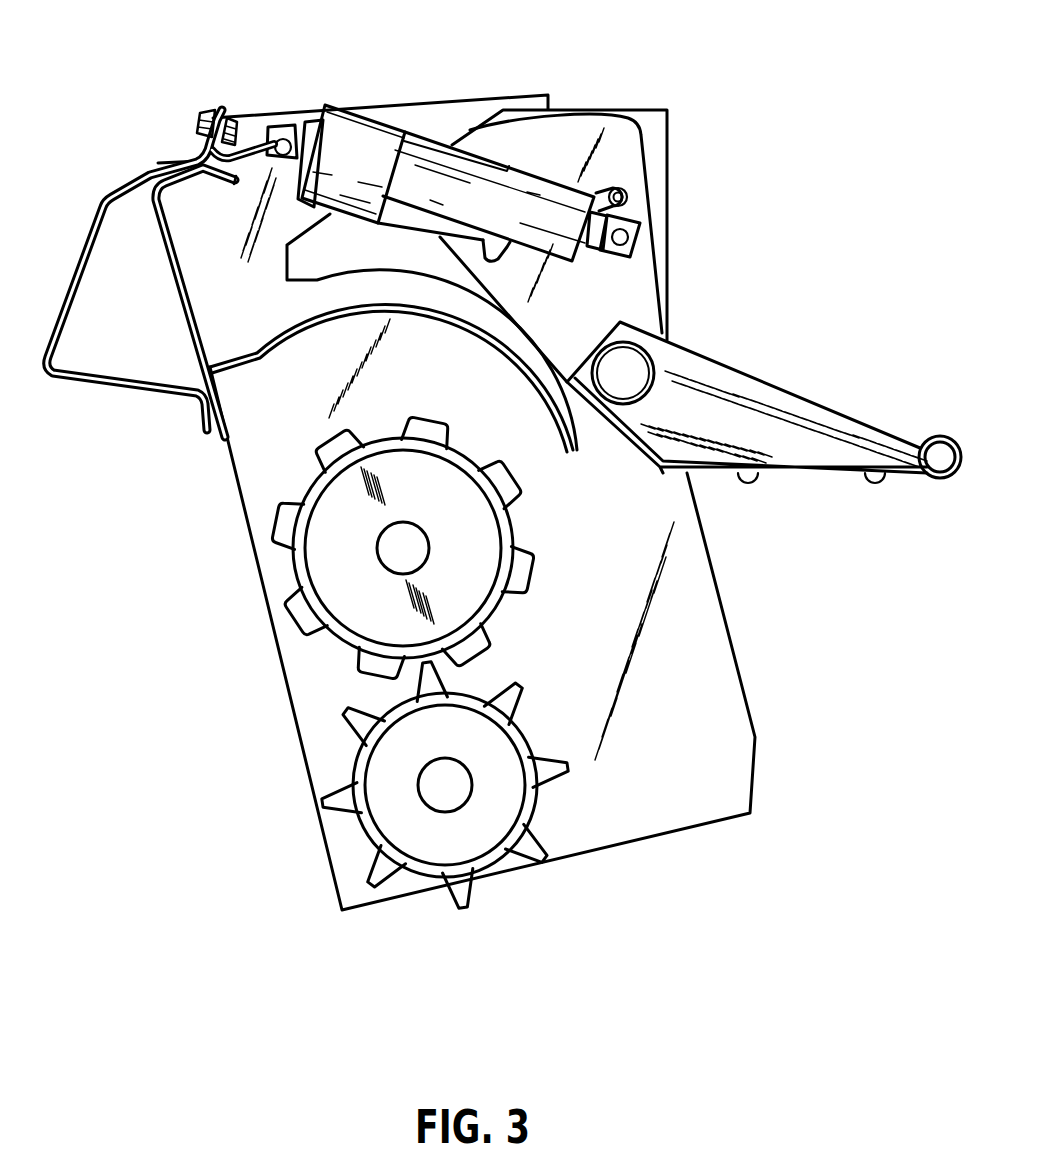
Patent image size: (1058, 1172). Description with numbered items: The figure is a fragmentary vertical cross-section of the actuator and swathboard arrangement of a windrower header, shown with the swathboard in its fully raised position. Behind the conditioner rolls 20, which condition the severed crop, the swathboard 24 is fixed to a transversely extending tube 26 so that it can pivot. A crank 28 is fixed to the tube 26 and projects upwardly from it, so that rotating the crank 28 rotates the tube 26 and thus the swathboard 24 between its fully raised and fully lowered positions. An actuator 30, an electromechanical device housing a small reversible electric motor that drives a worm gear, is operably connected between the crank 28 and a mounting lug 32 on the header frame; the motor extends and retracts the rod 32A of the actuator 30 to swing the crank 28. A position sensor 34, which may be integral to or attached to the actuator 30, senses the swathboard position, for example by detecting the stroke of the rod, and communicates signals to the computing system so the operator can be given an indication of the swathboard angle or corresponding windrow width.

The conditioner rolls 20 is at (393, 753).
The swathboard 24 is at (778, 408).
The tube 26 is at (643, 372).
The crank 28 is at (614, 145).
The actuator 30 is at (422, 132).
The mounting lug 32 is at (253, 120).
The rod 32A is at (596, 213).
The position sensor 34 is at (590, 245).